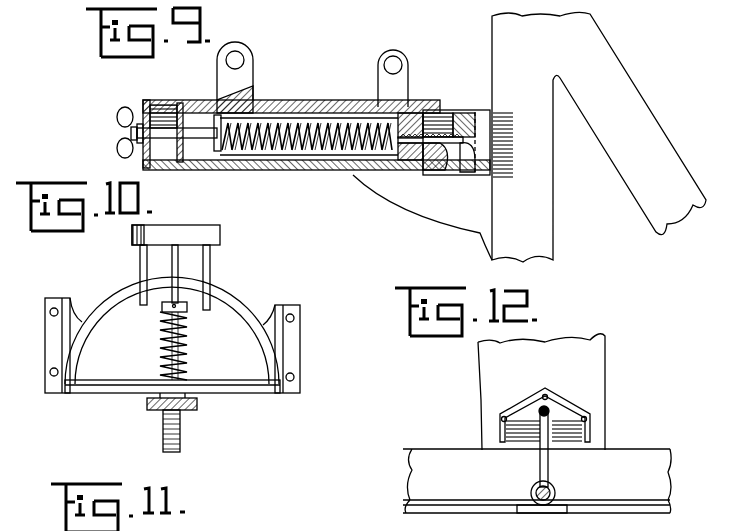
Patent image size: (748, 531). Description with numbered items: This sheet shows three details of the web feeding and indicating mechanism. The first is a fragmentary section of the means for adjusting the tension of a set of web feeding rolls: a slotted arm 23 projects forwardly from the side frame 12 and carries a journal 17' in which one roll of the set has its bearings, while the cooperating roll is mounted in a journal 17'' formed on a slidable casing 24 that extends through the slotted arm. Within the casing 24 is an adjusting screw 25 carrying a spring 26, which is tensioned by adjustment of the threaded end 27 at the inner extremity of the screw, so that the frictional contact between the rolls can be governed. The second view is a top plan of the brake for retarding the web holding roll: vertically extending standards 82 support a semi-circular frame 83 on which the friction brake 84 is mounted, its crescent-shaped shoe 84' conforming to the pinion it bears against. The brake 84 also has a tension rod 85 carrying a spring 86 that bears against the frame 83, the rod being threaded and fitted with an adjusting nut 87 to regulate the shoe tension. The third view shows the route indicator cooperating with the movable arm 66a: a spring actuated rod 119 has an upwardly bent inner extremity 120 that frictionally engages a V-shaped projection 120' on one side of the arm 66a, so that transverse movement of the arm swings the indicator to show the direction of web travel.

In FIG. 9, the side frame 12 is at (529, 137).
In FIG. 9, the journal 17' is at (412, 78).
In FIG. 9, the journal 17'' is at (253, 77).
In FIG. 9, the slotted arm 23 is at (313, 105).
In FIG. 9, the slidable casing 24 is at (257, 170).
In FIG. 9, the adjusting screw 25 is at (189, 140).
In FIG. 9, the spring 26 is at (336, 150).
In FIG. 9, the threaded end 27 is at (437, 113).
In FIG. 10, the standards 82 is at (290, 352).
In FIG. 10, the semi-circular frame 83 is at (246, 312).
In FIG. 10, the friction brake 84 is at (190, 277).
In FIG. 10, the shoe 84' is at (154, 245).
In FIG. 10, the tension rod 85 is at (186, 264).
In FIG. 10, the spring 86 is at (165, 340).
In FIG. 10, the adjusting nut 87 is at (197, 406).
In FIG. 12, the arm 66a is at (541, 392).
In FIG. 12, the spring actuated rod 119 is at (556, 493).
In FIG. 12, the inner extremity 120 is at (518, 446).
In FIG. 12, the V-shaped projection 120' is at (550, 413).